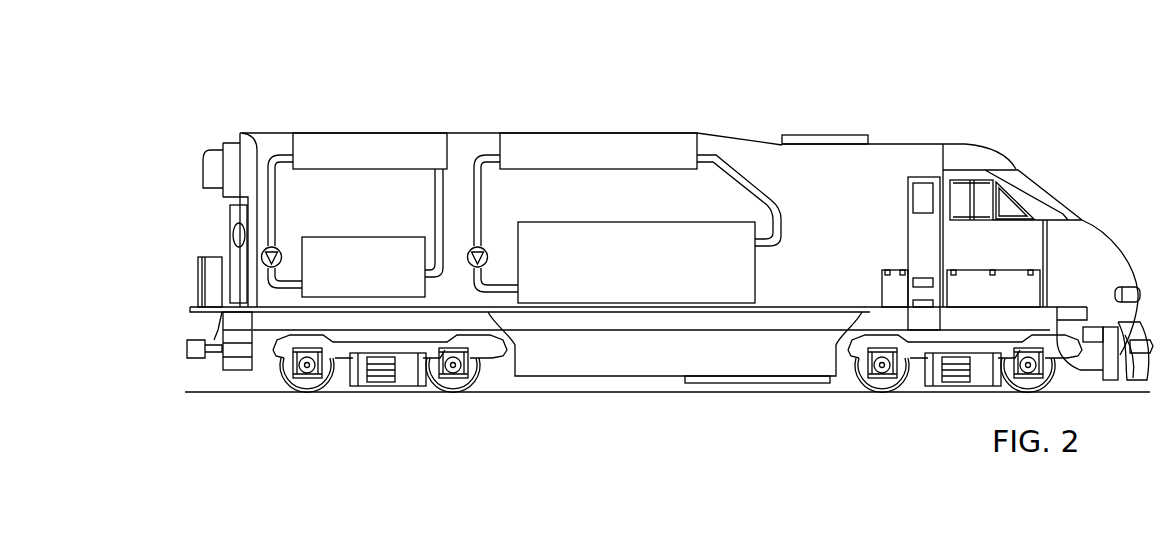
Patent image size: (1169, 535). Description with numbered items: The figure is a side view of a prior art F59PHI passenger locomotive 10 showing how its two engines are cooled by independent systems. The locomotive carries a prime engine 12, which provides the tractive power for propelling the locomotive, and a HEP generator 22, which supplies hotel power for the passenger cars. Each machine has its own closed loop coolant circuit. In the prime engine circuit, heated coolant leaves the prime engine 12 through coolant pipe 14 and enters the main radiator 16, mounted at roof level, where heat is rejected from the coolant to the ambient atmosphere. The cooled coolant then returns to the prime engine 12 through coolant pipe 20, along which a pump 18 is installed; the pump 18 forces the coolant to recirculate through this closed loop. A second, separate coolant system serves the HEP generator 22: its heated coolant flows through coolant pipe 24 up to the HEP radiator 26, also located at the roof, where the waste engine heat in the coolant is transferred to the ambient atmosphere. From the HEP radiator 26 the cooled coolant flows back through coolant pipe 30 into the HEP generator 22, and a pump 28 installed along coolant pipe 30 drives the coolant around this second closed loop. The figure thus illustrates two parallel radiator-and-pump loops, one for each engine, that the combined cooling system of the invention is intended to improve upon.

The locomotive 10 is at (553, 123).
The prime engine 12 is at (628, 283).
The coolant pipe 14 is at (763, 250).
The main radiator 16 is at (665, 153).
The pump 18 is at (471, 266).
The coolant pipe 20 is at (495, 298).
The HEP generator 22 is at (363, 285).
The coolant pipe 24 is at (443, 202).
The HEP radiator 26 is at (332, 148).
The pump 28 is at (263, 254).
The coolant pipe 30 is at (290, 287).